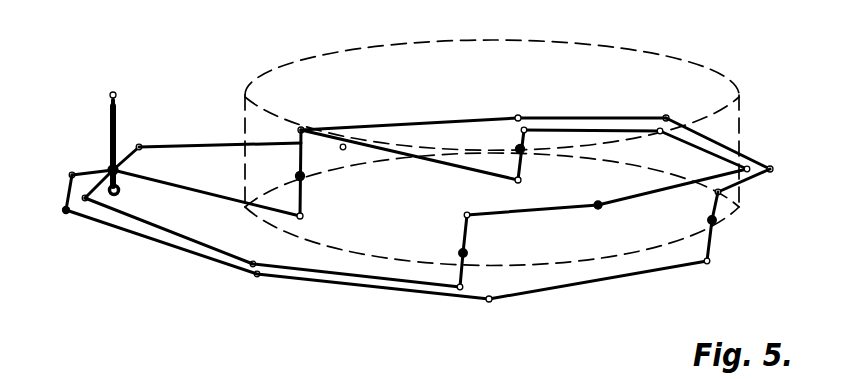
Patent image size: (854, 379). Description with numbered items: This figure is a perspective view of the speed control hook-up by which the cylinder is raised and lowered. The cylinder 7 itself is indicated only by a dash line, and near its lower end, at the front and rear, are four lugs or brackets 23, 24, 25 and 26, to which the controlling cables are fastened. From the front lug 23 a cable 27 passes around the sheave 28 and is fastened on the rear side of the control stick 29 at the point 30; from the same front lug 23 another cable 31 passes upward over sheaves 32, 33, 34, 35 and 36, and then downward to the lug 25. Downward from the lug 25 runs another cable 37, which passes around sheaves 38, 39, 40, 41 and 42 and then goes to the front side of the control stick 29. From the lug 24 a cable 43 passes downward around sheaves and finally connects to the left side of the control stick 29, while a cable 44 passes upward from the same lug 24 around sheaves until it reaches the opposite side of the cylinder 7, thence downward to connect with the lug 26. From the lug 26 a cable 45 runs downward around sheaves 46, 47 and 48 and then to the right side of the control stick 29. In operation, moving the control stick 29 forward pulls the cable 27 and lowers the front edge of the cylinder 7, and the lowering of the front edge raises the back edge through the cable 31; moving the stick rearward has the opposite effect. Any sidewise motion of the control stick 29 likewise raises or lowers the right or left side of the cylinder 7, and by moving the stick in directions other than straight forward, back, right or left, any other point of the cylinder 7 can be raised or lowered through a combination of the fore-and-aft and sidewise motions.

The cylinder 7 is at (661, 55).
The front lug 23 is at (305, 179).
The lug 24 is at (459, 252).
The lug 25 is at (708, 221).
The lug 26 is at (523, 151).
The cable 27 is at (172, 195).
The sheave 28 is at (305, 224).
The control stick 29 is at (118, 109).
The fastening point on control stick 30 is at (120, 171).
The cable 31 is at (296, 176).
The sheave 32 is at (305, 127).
The sheave 33 is at (535, 106).
The sheave 34 is at (693, 100).
The sheave 35 is at (776, 169).
The sheave 36 is at (724, 193).
The cable 37 is at (135, 250).
The sheave 38 is at (708, 266).
The sheave 39 is at (489, 303).
The sheave 40 is at (254, 279).
The sheave 41 is at (72, 216).
The sheave 42 is at (69, 176).
The cable 43 is at (152, 231).
The cable 44 is at (469, 234).
The cable 45 is at (200, 143).
The sheave 46 is at (515, 184).
The sheave 47 is at (344, 151).
The sheave 48 is at (143, 144).